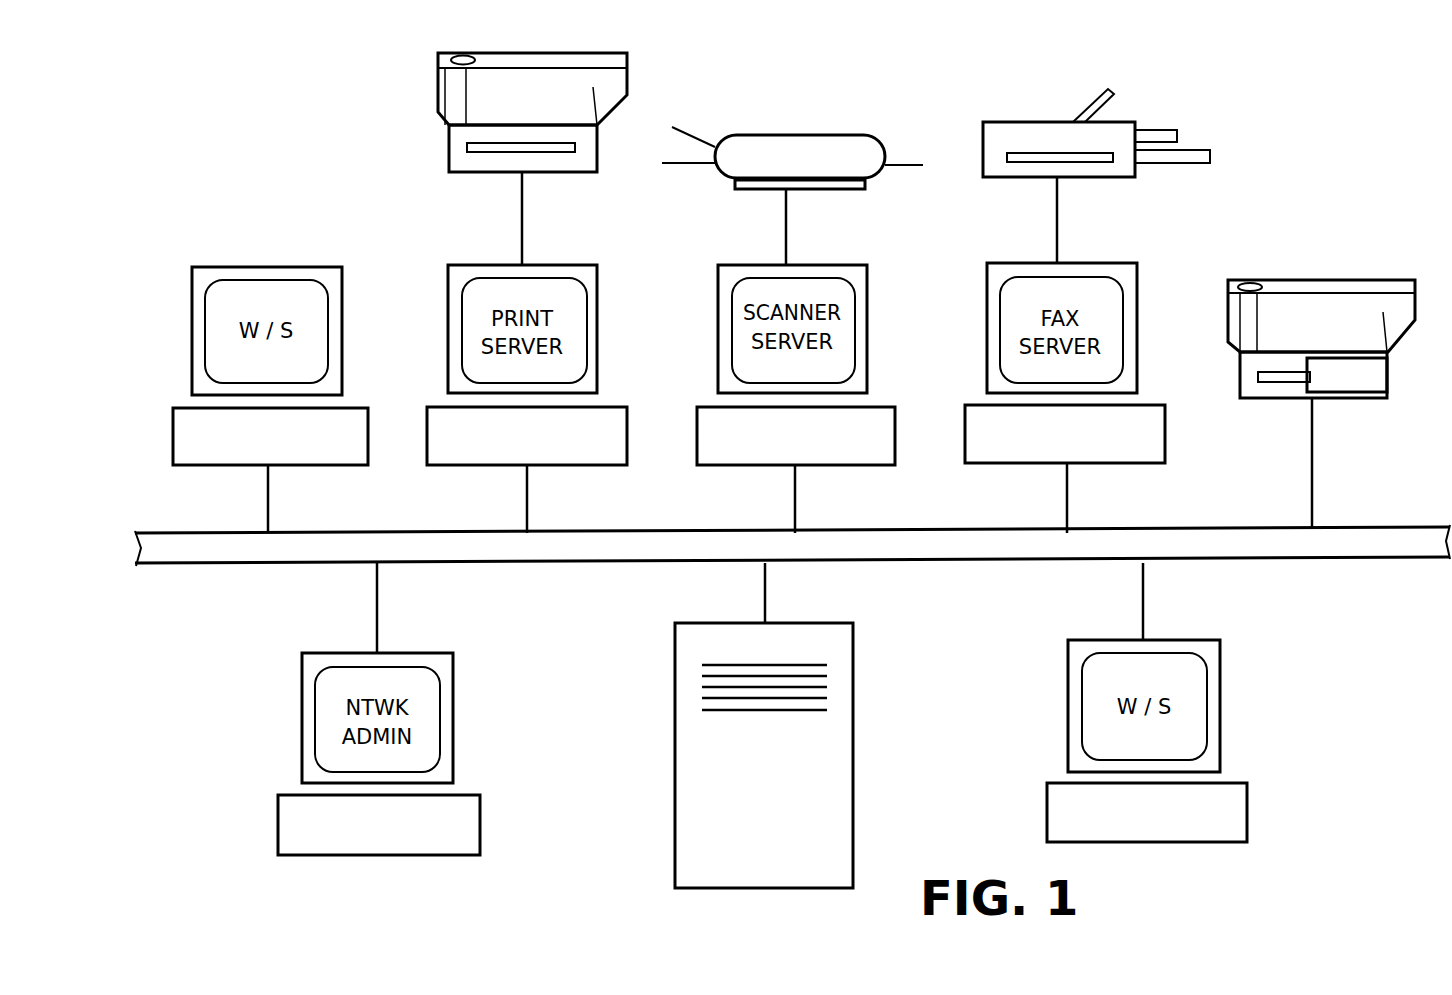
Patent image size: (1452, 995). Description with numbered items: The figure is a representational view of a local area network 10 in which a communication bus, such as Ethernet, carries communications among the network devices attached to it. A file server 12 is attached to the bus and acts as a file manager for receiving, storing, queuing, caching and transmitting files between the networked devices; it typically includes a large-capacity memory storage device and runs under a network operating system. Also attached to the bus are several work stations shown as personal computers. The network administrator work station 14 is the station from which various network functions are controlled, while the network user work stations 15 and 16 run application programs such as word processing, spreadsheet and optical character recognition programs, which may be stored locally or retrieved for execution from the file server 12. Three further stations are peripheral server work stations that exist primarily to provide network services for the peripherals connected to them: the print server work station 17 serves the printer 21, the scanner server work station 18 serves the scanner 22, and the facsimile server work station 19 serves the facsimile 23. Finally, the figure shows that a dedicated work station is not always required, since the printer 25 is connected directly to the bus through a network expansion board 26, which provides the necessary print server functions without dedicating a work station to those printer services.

The local area network 10 is at (297, 189).
The file server 12 is at (853, 724).
The network administrator work station 14 is at (475, 795).
The network user work station 15 is at (1046, 797).
The network user work station 16 is at (331, 467).
The print server work station 17 is at (575, 467).
The scanner server work station 18 is at (853, 467).
The facsimile server work station 19 is at (1142, 465).
The printer 21 is at (438, 94).
The scanner 22 is at (853, 192).
The facsimile 23 is at (1122, 178).
The printer 25 is at (1380, 277).
The network expansion board 26 is at (1388, 372).